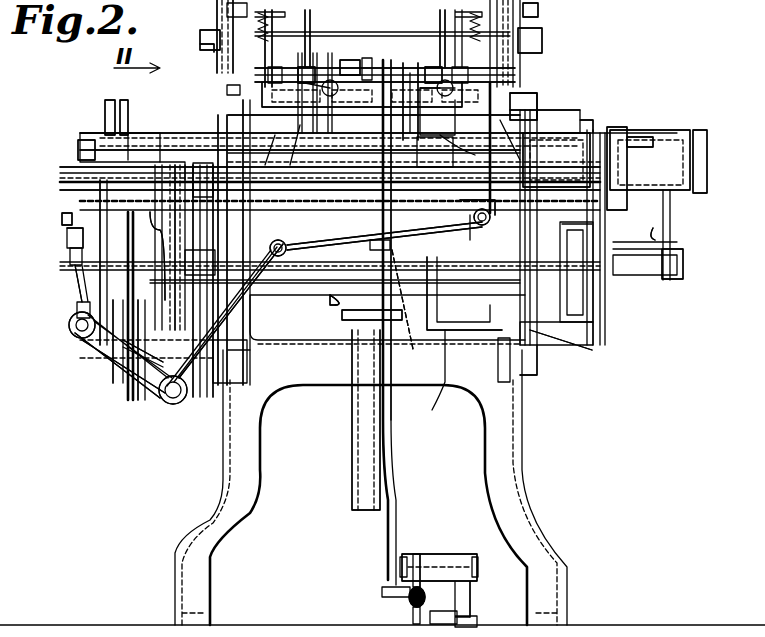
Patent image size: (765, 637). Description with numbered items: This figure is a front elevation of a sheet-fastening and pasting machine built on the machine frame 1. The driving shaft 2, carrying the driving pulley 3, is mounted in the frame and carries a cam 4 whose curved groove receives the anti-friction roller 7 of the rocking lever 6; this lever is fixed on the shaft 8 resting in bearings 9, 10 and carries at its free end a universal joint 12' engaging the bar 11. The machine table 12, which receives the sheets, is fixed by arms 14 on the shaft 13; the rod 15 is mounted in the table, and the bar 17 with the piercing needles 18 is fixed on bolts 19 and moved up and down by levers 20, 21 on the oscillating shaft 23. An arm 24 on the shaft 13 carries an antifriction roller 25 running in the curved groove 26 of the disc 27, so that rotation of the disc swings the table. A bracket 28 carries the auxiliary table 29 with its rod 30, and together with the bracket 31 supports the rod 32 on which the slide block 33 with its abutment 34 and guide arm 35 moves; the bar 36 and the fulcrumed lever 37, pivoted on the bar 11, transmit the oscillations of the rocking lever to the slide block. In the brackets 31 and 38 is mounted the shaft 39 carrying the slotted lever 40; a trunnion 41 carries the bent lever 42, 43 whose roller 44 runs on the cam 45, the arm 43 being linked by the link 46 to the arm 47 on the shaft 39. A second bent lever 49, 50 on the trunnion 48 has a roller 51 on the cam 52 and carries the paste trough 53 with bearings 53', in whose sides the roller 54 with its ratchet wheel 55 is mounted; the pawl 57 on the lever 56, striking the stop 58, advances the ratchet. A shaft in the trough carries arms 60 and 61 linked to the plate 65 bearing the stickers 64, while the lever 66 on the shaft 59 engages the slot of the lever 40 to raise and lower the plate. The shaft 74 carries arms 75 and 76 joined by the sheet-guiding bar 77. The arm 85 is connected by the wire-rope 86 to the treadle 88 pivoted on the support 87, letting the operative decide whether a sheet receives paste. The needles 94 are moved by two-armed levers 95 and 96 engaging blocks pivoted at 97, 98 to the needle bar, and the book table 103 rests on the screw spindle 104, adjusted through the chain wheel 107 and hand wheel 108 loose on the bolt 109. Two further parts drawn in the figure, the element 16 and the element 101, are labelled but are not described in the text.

The machine frame 1 is at (248, 448).
The driving shaft 2 is at (302, 296).
The driving pulley 3 is at (578, 226).
The cam 4 is at (122, 385).
The rocking lever 6 is at (96, 278).
The anti-friction roller 7 is at (100, 358).
The shaft 8 is at (85, 355).
The bearing 9 is at (232, 388).
The bearing 10 is at (164, 340).
The bar 11 is at (80, 272).
The universal joint 12' is at (71, 228).
The machine table 12 is at (384, 243).
The shaft 13 is at (335, 290).
The arm 14 is at (247, 232).
The rod 15 is at (374, 138).
The rail 16 is at (378, 175).
The bar 17 is at (410, 222).
The piercing needle 18 is at (372, 115).
The bolt 19 is at (228, 222).
The lever 20 is at (465, 215).
The lever 21 is at (300, 235).
The shaft 23 is at (378, 251).
The arm 24 is at (182, 280).
The antifriction roller 25 is at (173, 404).
The curved groove 26 is at (195, 180).
The disc 27 is at (212, 165).
The bracket 28 is at (545, 372).
The auxiliary table 29 is at (692, 130).
The rod 30 is at (648, 272).
The bracket 31 is at (118, 380).
The rod 32 is at (164, 256).
The slide block 33 is at (655, 130).
The abutment 34 is at (643, 148).
The guide arm 35 is at (656, 233).
The bar 36 is at (440, 295).
The fulcrumed lever 37 is at (256, 341).
The bracket 38 is at (535, 133).
The shaft 39 is at (173, 148).
The lever 40 is at (435, 152).
The trunnion 41 is at (78, 192).
The arm of bent lever 42 is at (130, 150).
The arm of bent lever 43 is at (88, 178).
The antifriction roller 44 is at (175, 167).
The cam 45 is at (140, 405).
The link 46 is at (104, 124).
The arm 47 is at (128, 122).
The trunnion 48 is at (590, 122).
The arm of bent lever 49 is at (556, 160).
The arm of bent lever 50 is at (530, 110).
The antifriction roller 51 is at (580, 352).
The cam 52 is at (500, 356).
The trough 53 is at (327, 97).
The bearing 53' is at (409, 65).
The roller 54 is at (340, 66).
The ratchet wheel 55 is at (228, 92).
The lever 56 is at (238, 242).
The pawl 57 is at (274, 72).
The stop 58 is at (215, 50).
The shaft 59 is at (350, 68).
The arm 60 is at (311, 58).
The arm 61 is at (358, 122).
The stickers 64 is at (297, 152).
The plate 65 is at (266, 157).
The lever 66 is at (432, 66).
The shaft 74 is at (517, 106).
The arm 75 is at (252, 190).
The arm 76 is at (467, 149).
The bar 77 is at (522, 151).
The arm 85 is at (405, 94).
The wire-rope 86 is at (395, 437).
The support 87 is at (465, 566).
The treadle 88 is at (418, 572).
The needle 94 is at (330, 82).
The two-armed lever 95 is at (200, 38).
The two-armed lever 96 is at (546, 38).
The pivot 97 is at (205, 18).
The pivot 98 is at (545, 10).
The column 101 is at (620, 130).
The book table 103 is at (417, 346).
The screw spindle 104 is at (360, 452).
The chain wheel 107 is at (343, 318).
The hand wheel 108 is at (446, 372).
The bolt 109 is at (330, 302).